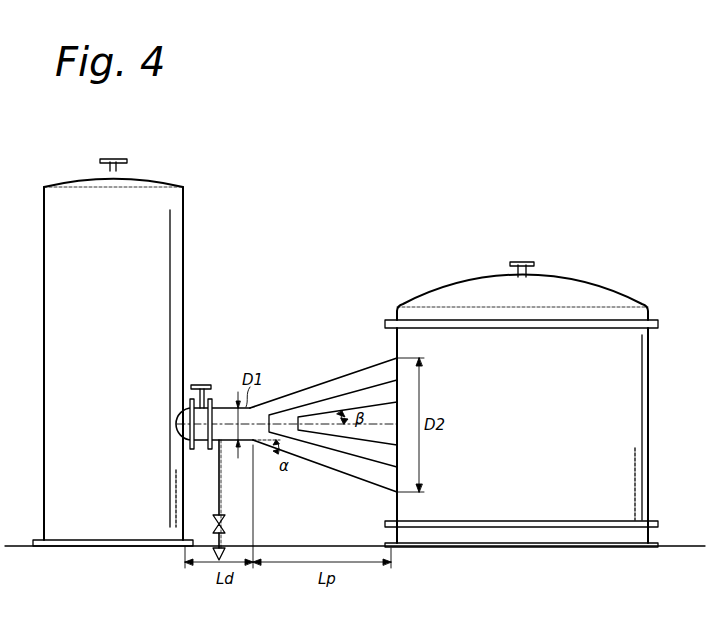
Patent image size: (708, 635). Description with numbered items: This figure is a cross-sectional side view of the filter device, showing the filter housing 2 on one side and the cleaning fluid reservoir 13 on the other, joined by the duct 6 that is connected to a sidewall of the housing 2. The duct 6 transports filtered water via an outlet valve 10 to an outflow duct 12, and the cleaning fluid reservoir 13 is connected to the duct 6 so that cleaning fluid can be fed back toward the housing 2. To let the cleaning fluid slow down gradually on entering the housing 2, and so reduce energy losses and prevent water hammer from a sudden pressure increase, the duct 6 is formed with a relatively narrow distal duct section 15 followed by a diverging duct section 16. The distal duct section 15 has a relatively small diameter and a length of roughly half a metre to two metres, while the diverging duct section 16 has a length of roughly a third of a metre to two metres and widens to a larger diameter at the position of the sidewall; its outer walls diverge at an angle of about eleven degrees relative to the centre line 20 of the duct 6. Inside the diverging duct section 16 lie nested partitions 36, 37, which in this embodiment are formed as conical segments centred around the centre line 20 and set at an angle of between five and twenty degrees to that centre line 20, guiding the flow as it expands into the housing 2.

The filter housing 2 is at (617, 392).
The duct 6 is at (323, 424).
The outlet valve 10 is at (216, 521).
The outflow duct 12 is at (216, 551).
The cleaning fluid reservoir 13 is at (185, 222).
The distal duct section 15 is at (212, 449).
The diverging duct section 16 is at (323, 373).
The centre line 20 is at (236, 446).
The partition 36 is at (352, 462).
The partition 37 is at (379, 447).